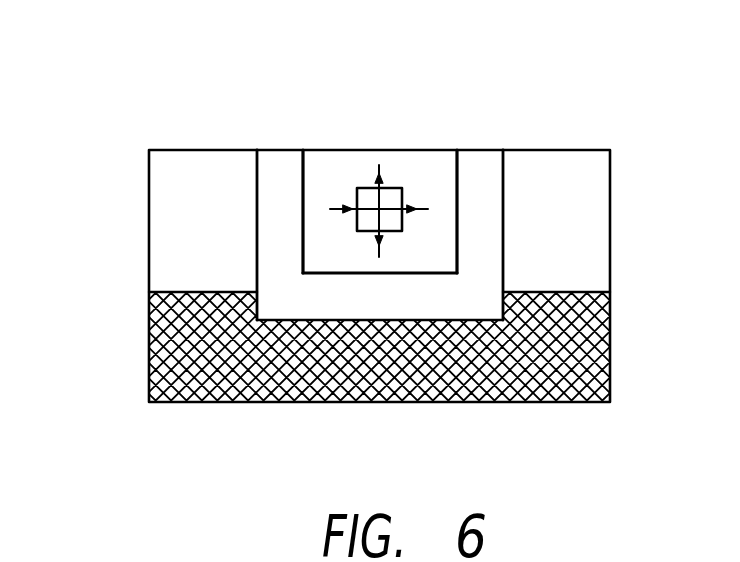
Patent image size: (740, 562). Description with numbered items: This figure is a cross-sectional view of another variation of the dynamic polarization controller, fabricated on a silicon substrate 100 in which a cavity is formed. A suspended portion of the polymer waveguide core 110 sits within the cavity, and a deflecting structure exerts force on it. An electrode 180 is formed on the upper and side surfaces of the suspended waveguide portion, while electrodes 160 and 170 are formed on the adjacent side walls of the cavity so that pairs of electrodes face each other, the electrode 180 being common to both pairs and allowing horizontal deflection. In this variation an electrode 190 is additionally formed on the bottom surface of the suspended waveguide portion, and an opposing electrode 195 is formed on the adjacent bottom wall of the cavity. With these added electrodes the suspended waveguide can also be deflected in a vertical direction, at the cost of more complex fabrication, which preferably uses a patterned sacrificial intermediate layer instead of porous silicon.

The silicon substrate 100 is at (163, 370).
The polymer waveguide core 110 is at (388, 188).
The electrode 160 is at (258, 174).
The electrode 170 is at (507, 185).
The electrode 180 is at (358, 150).
The electrode 190 is at (407, 273).
The opposing electrode 195 is at (332, 320).